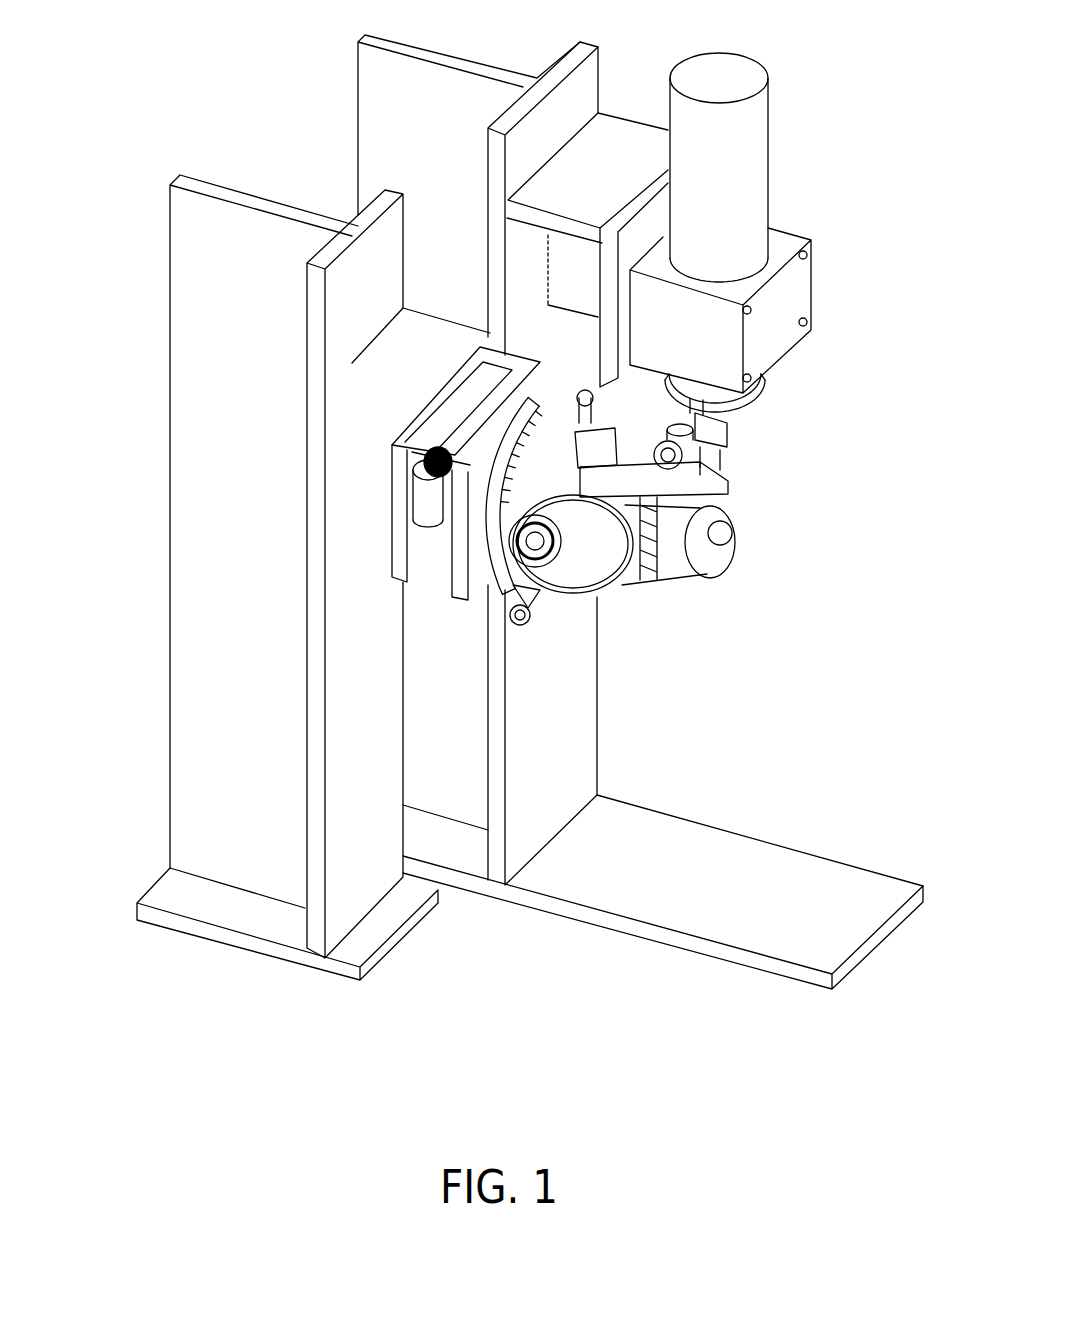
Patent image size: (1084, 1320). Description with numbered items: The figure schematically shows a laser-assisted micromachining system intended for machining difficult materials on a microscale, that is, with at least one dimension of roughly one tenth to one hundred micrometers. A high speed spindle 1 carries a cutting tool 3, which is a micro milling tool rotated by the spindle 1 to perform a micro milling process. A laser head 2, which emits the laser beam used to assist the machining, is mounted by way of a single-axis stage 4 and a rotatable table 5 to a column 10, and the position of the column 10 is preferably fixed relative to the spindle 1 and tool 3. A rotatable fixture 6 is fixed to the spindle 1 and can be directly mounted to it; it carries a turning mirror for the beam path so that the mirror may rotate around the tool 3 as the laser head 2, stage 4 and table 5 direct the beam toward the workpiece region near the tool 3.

The column 10 is at (222, 307).
The high speed spindle 1 is at (738, 190).
The rotatable fixture 6 is at (748, 403).
The cutting tool 3 is at (720, 457).
The laser head 2 is at (682, 560).
The 1-axis stage 4 is at (415, 447).
The rotatable table 5 is at (522, 543).